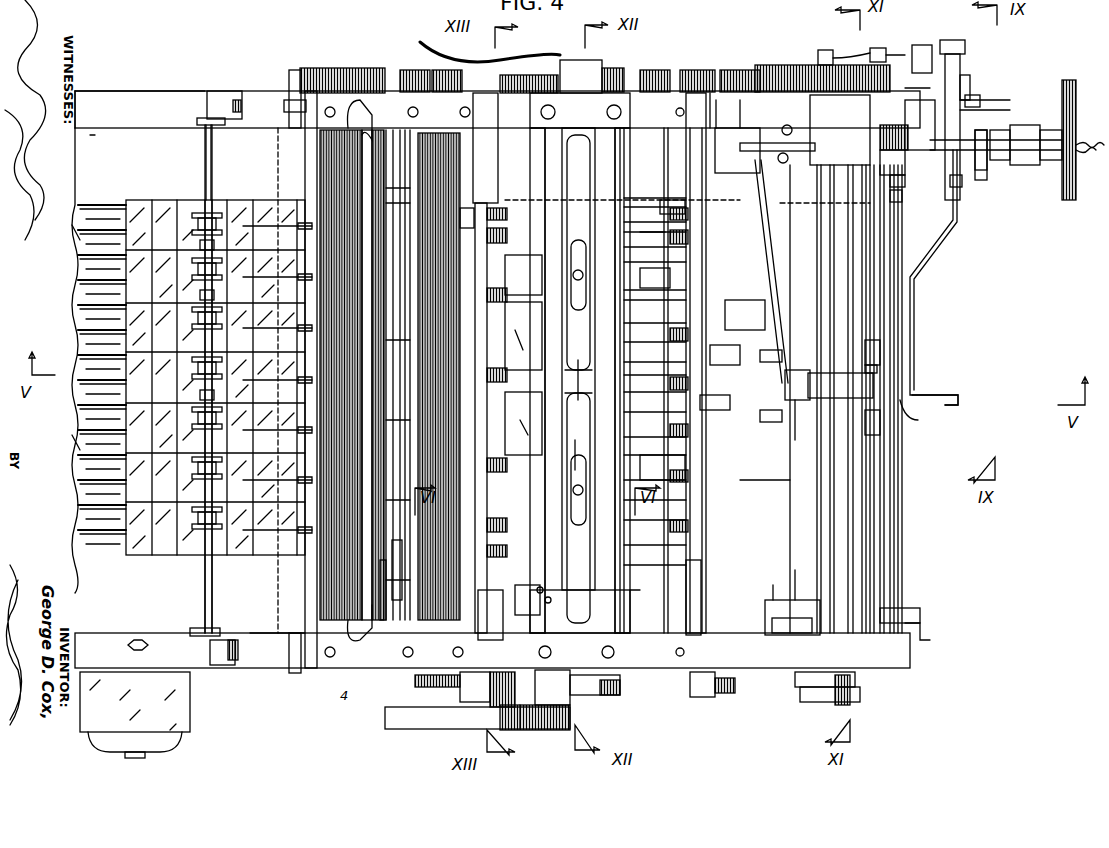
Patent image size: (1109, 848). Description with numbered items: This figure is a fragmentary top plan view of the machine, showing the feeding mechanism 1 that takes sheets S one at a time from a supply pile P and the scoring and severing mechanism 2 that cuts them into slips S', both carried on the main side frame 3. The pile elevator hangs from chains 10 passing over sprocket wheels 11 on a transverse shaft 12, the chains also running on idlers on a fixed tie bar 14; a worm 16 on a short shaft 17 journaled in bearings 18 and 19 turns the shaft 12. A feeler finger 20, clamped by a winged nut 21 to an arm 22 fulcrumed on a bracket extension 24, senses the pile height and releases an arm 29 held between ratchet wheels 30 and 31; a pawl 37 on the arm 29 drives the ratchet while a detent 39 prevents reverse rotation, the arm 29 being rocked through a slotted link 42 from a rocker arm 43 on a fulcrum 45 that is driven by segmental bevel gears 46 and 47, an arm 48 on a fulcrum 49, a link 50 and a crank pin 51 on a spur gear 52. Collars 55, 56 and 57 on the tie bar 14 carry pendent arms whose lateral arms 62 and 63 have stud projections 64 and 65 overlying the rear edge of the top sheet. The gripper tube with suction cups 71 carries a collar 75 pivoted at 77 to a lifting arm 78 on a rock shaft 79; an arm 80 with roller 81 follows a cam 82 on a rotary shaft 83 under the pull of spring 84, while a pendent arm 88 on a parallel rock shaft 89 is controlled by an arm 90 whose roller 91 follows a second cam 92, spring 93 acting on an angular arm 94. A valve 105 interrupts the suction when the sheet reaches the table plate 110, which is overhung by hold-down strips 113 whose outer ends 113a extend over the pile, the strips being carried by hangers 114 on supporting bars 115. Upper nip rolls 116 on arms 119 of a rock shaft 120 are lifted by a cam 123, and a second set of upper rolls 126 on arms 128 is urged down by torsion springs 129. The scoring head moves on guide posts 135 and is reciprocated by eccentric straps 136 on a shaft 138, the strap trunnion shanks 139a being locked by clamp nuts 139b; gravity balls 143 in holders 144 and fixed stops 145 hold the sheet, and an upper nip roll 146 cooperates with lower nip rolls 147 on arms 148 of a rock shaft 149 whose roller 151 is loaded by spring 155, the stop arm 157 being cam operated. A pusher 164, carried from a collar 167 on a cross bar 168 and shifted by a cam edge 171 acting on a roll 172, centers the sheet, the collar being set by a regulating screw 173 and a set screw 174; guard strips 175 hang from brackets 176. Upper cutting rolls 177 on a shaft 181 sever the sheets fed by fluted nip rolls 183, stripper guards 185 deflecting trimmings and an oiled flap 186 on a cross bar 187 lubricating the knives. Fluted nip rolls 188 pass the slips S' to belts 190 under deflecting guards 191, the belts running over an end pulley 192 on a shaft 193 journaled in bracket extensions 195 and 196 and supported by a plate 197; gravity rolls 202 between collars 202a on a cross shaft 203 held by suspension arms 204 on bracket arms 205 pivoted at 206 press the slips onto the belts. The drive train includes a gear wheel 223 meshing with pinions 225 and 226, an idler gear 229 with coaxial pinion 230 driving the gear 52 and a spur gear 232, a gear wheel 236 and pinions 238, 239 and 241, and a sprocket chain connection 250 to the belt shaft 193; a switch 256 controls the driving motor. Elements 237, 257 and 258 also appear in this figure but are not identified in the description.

The feeding mechanism 1 is at (1000, 28).
The scoring and severing mechanism 2 is at (490, 43).
The main side frame 3 is at (401, 109).
The chains 10 is at (915, 608).
The sprocket wheels 11 is at (918, 419).
The transverse shaft 12 is at (900, 223).
The fixed tie bar 14 is at (880, 500).
The worm 16 is at (908, 125).
The short longitudinally extending shaft 17 is at (1000, 160).
The upstanding bearing 18 is at (1045, 160).
The upstanding bearing 19 is at (903, 137).
The feeler finger 20 is at (918, 420).
The winged clamp nut 21 is at (940, 400).
The horizontal arm 22 is at (895, 310).
The rearward bracket extension 24 is at (1012, 125).
The arm 29 is at (975, 100).
The ratchet wheel 30 is at (971, 135).
The ratchet wheel 31 is at (985, 175).
The pawl 37 is at (958, 187).
The detent 39 is at (1016, 135).
The vertical link 42 is at (958, 40).
The rocker arm 43 is at (968, 75).
The fixed fulcrum 45 is at (983, 92).
The segmental bevel gear 46 is at (944, 127).
The segmental bevel gear 47 is at (920, 45).
The arm 48 is at (898, 50).
The fixed fulcrum 49 is at (902, 88).
The link 50 is at (860, 52).
The crank pin 51 is at (822, 50).
The spur gear 52 is at (865, 52).
The collar 55 is at (880, 345).
The collar 56 is at (878, 368).
The collar 57 is at (880, 422).
The lateral arm 62 is at (880, 300).
The lateral arm 63 is at (875, 512).
The tapered stud projection 64 is at (830, 287).
The tapered stud projection 65 is at (848, 500).
The suction cups 71 is at (768, 379).
The collar 75 is at (795, 370).
The pivot 77 is at (755, 187).
The clevised lifting arm 78 is at (803, 420).
The transverse rock shaft 79 is at (822, 257).
The arm 80 is at (795, 633).
The roller 81 is at (790, 610).
The cam 82 is at (793, 585).
The rotary shaft 83 is at (815, 320).
The helical tension spring 84 is at (780, 130).
The pendent arm 88 is at (875, 385).
The rock shaft 89 is at (855, 452).
The arm 90 is at (835, 700).
The roller 91 is at (805, 695).
The cam 92 is at (800, 680).
The helical spring 93 is at (782, 163).
The angular arm 94 is at (820, 140).
The valve 105 is at (755, 160).
The horizontal table plate 110 is at (642, 597).
The hold-down strips 113 is at (650, 208).
The hold-down strip extension 113a is at (770, 200).
The hangers 114 is at (668, 200).
The transverse supporting bars 115 is at (680, 128).
The upper nip rolls 116 is at (765, 471).
The horizontal arms 119 is at (740, 300).
The transverse rock shaft 120 is at (706, 586).
The cam 123 is at (615, 156).
The upper rolls 126 is at (650, 455).
The forwardly extending arms 128 is at (655, 290).
The torsion springs 129 is at (690, 263).
The guide posts 135 is at (607, 112).
The eccentric straps 136 is at (615, 70).
The rotary shaft 138 is at (470, 705).
The trunnion shanks 139a is at (572, 62).
The clamp nuts 139b is at (560, 138).
The gravity balls 143 is at (578, 375).
The fixed holder devices 144 is at (578, 380).
The fixed stops 145 is at (645, 427).
The continuous upper nip roll 146 is at (518, 255).
The lower nip rolls 147 is at (579, 455).
The horizontal arms 148 is at (511, 380).
The transverse supporting rock shaft 149 is at (511, 375).
The roller 151 is at (535, 724).
The spring 155 is at (415, 682).
The arm 157 is at (445, 690).
The pusher 164 is at (511, 549).
The collar 167 is at (478, 636).
The cross bar 168 is at (498, 158).
The cam edge 171 is at (525, 585).
The roll 172 is at (616, 357).
The regulating screw 173 is at (505, 724).
The set screw 174 is at (717, 672).
The additional guard strips 175 is at (528, 295).
The suspension brackets 176 is at (522, 378).
The upper cutting rolls 177 is at (445, 270).
The transverse rotary shaft 181 is at (417, 648).
The fluted auxiliary nip roll 183 is at (437, 128).
The curved stripper guards 185 is at (386, 580).
The oil saturated flap 186 is at (395, 560).
The fixed cross bar 187 is at (346, 378).
The auxiliary fluted nip roll 188 is at (333, 160).
The horizontal belts 190 is at (82, 273).
The deflecting guards 191 is at (245, 328).
The end pulley 192 is at (278, 583).
The shaft 193 is at (290, 85).
The forward bracket extension 195 is at (98, 91).
The forward bracket extension 196 is at (268, 668).
The sustaining plate 197 is at (56, 412).
The gravity influenced rolls 202 is at (198, 270).
The collars 202a is at (200, 297).
The cross shaft 203 is at (205, 169).
The suspension arms 204 is at (197, 120).
The bracket arms 205 is at (210, 92).
The fixed pivots 206 is at (241, 102).
The gear wheel 223 is at (695, 70).
The spur pinion 225 is at (740, 70).
The spur pinion 226 is at (662, 64).
The idler spur gear 229 is at (755, 68).
The coaxial pinion 230 is at (770, 68).
The spur gear 232 is at (825, 78).
The gear wheel 236 is at (425, 70).
The gear 237 is at (460, 70).
The pinion 238 is at (535, 75).
The pinion 239 is at (600, 88).
The pinion 241 is at (315, 68).
The sprocket chain connection 250 is at (291, 80).
The switch 256 is at (135, 715).
The plate 257 is at (390, 729).
The wheel 258 is at (1068, 200).
The sheet S is at (662, 316).
The cut sections or slips S' is at (199, 377).
The supply pile P is at (838, 536).